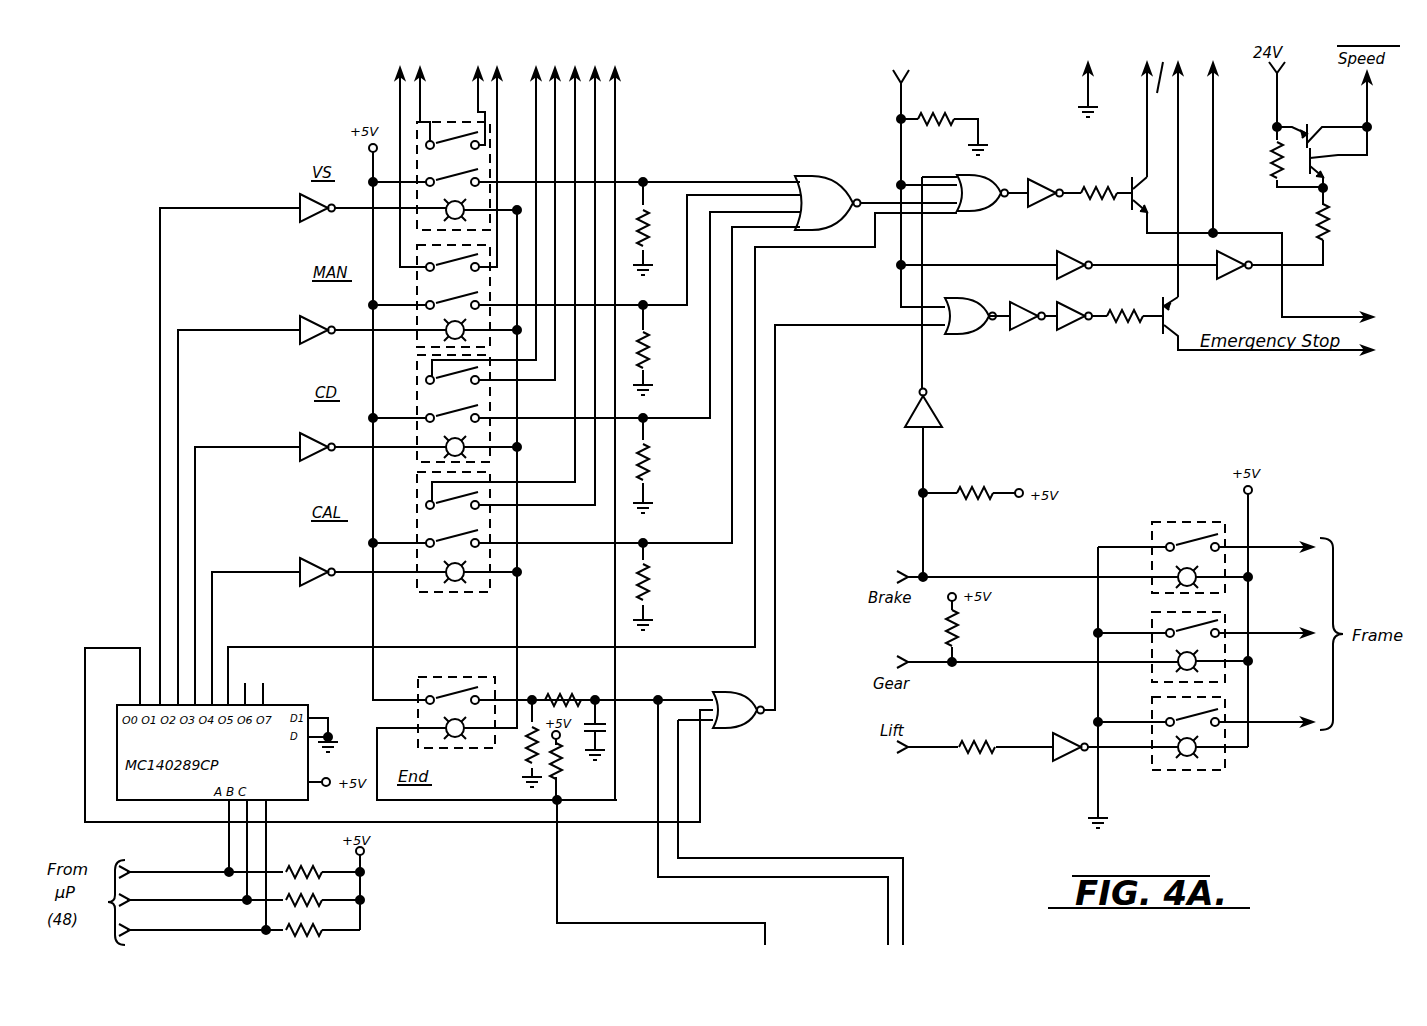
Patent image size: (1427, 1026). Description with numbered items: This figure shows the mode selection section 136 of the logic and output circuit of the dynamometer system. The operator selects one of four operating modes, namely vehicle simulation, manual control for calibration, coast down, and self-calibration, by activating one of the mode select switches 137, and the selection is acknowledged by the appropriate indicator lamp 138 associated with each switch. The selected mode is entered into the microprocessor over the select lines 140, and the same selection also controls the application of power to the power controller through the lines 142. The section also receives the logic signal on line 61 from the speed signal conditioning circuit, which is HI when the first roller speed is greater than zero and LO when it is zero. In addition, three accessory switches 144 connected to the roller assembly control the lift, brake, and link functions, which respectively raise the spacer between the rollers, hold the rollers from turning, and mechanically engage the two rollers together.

The logic signal line 61 is at (900, 96).
The mode selection section 136 is at (850, 478).
The mode select switches 137 is at (452, 130).
The indicator lamp 138 is at (446, 215).
The select lines 140 is at (620, 66).
The lines to power controller 142 is at (1220, 66).
The accessory switches 144 is at (1185, 535).